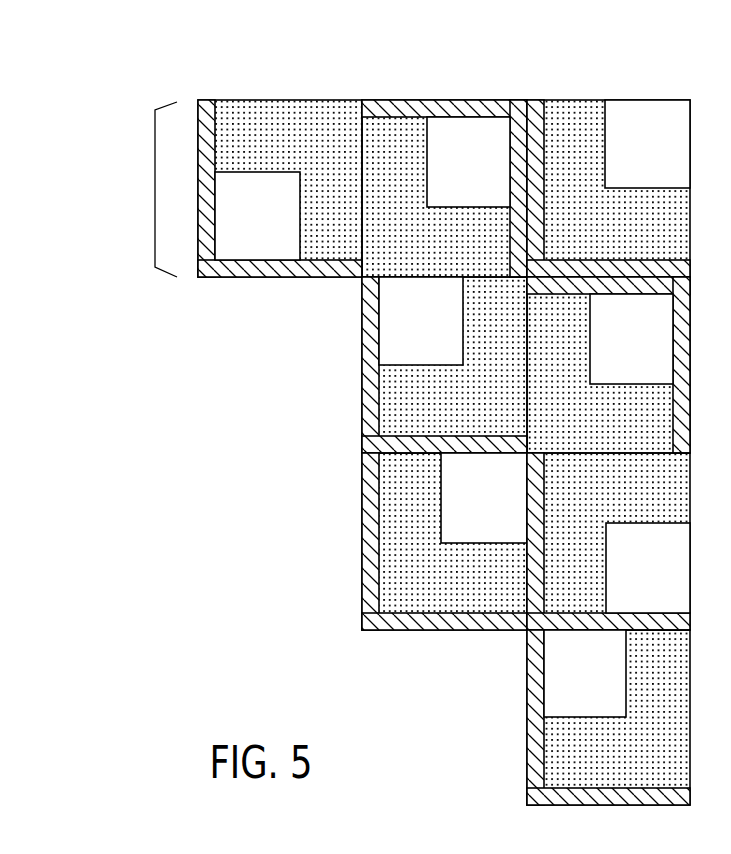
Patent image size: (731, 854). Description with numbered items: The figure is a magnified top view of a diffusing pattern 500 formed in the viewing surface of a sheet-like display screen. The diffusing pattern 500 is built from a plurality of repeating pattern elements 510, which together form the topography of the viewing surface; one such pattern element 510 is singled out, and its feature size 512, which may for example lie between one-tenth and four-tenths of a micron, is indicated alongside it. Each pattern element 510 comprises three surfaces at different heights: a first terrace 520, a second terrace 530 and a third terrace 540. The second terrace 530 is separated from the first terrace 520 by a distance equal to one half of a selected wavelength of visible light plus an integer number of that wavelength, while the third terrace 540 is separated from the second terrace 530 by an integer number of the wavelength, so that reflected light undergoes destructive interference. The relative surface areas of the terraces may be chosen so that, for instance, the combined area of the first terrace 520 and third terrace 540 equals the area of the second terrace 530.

The diffusing pattern 500 is at (396, 425).
The pattern element 510 is at (278, 219).
The feature size 512 is at (149, 189).
The first terrace 520 is at (298, 172).
The second terrace 530 is at (266, 102).
The third terrace 540 is at (208, 112).